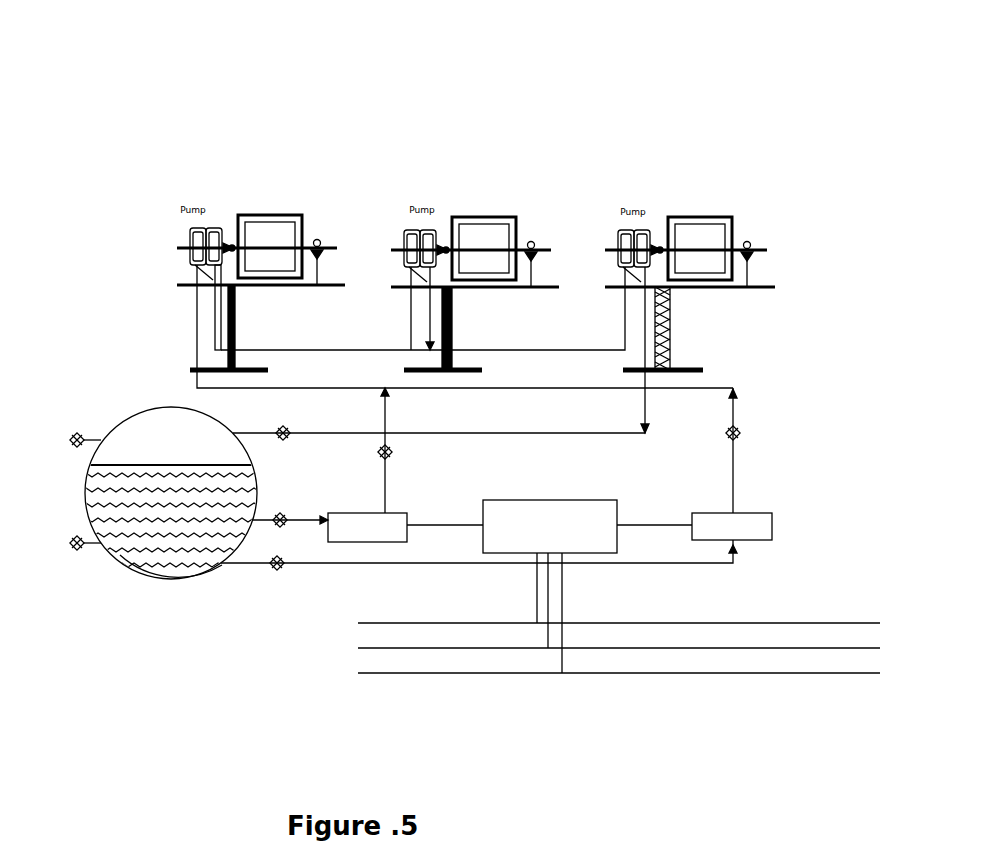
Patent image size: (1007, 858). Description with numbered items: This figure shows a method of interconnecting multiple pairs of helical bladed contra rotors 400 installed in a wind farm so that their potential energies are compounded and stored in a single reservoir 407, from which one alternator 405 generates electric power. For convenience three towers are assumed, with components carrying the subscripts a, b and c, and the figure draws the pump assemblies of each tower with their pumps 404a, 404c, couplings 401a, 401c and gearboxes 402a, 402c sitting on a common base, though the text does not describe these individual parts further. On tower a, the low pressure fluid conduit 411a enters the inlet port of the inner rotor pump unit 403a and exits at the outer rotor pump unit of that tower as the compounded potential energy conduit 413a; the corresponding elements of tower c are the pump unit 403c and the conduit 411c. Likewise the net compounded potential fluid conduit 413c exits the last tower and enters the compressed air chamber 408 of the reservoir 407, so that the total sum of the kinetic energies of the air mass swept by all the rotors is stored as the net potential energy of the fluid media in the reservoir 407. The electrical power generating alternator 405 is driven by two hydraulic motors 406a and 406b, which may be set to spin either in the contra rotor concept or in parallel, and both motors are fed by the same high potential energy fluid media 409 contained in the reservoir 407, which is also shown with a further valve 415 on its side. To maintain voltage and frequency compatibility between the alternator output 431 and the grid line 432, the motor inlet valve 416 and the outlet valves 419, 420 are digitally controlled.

The helical bladed contra rotors 400 is at (116, 80).
The coupling 401a is at (230, 242).
The coupling 401c is at (690, 217).
The gearbox 402a is at (282, 220).
The gearbox 402c is at (722, 221).
The inner rotor pump unit 403a is at (185, 246).
The shaft 403c is at (630, 246).
The pump 404a is at (196, 226).
The pump 404c is at (641, 226).
The alternator 405 is at (510, 500).
The hydraulic motor 406a is at (375, 513).
The hydraulic motor 406b is at (690, 513).
The reservoir 407 is at (142, 573).
The compressed air chamber 408 is at (155, 440).
The high potential energy fluid media 409 is at (87, 502).
The low pressure fluid conduit 411a is at (195, 351).
The return pipe 411c is at (627, 346).
The compounded potential energy conduit 413a is at (212, 330).
The net compounded potential fluid conduit 413c is at (670, 322).
The valve 415 is at (76, 552).
The motor inlet valve 416 is at (281, 573).
The outlet valve 419 is at (380, 450).
The outlet valve 420 is at (740, 437).
The alternator output 431 is at (535, 606).
The grid line 432 is at (805, 623).